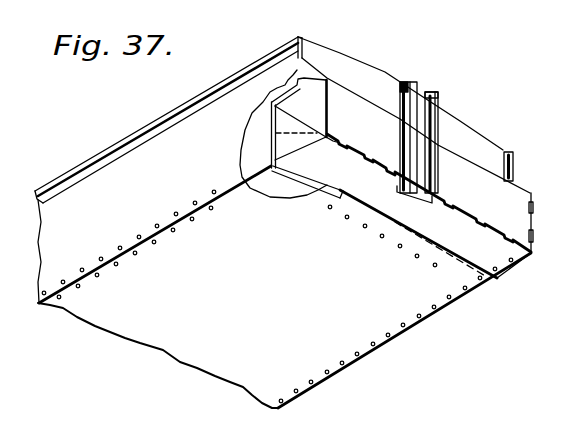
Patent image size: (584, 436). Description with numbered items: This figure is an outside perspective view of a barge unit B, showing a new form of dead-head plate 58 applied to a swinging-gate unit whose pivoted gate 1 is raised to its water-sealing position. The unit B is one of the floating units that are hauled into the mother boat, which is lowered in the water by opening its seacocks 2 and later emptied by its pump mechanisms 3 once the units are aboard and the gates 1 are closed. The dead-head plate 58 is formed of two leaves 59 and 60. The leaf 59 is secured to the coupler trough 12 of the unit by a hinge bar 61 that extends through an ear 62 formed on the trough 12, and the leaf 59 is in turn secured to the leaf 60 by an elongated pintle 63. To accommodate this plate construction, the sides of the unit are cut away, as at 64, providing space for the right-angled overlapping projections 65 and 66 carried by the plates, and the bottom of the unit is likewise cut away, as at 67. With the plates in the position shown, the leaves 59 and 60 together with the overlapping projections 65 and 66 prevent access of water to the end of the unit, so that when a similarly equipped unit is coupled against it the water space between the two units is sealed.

The unit B is at (284, 296).
The gate 1 is at (477, 149).
The seacock 2 is at (245, 170).
The pump mechanism 3 is at (470, 283).
The coupler trough 12 is at (435, 98).
The dead-head plate 58 is at (529, 187).
The leaf 59 is at (519, 222).
The leaf 60 is at (507, 259).
The hinge bar 61 is at (354, 110).
The ear 62 is at (407, 79).
The elongated pintle 63 is at (320, 139).
The cut-away side portion 64 is at (268, 104).
The right-angled overlapping projection 65 is at (299, 119).
The right-angled overlapping projection 66 is at (290, 142).
The cut-away bottom portion 67 is at (285, 180).